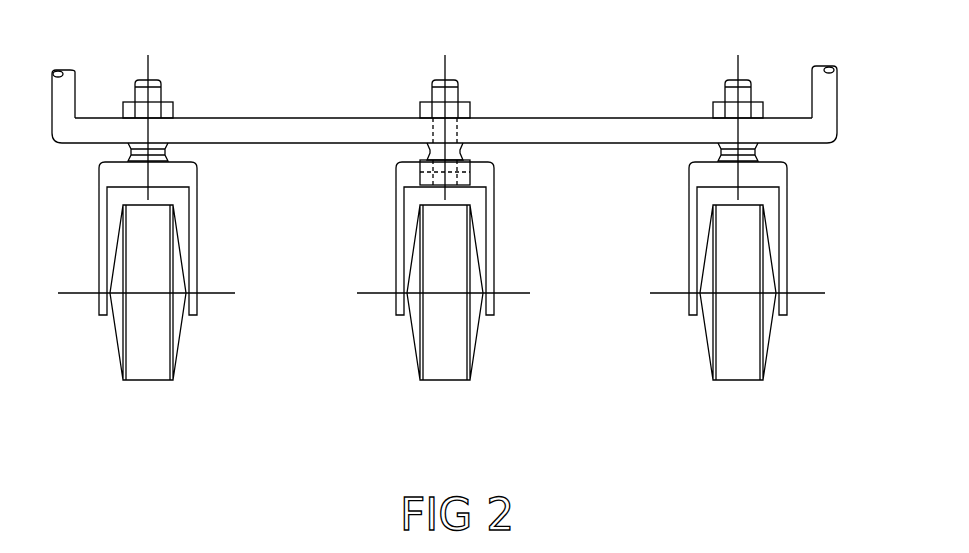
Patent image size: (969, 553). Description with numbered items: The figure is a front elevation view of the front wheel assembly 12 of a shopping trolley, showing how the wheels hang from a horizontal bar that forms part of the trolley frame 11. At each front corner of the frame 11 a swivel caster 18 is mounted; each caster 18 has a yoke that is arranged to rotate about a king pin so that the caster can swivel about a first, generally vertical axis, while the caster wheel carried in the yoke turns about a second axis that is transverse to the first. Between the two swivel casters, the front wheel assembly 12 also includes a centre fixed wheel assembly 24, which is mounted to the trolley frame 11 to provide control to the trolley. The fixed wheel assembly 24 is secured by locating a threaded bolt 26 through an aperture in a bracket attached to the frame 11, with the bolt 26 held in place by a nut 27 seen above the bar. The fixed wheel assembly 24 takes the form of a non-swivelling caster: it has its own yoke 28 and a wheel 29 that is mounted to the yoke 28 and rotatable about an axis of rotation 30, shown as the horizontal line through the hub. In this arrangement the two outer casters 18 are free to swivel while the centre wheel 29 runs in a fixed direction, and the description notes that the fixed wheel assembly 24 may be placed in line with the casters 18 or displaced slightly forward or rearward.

The frame 11 is at (310, 128).
The front wheel assembly 12 is at (544, 88).
The caster 18 is at (129, 400).
The centre fixed wheel assembly 24 is at (409, 392).
The threaded bolt 26 is at (408, 106).
The nut 27 is at (459, 109).
The yoke 28 is at (497, 176).
The wheel 29 is at (451, 326).
The axis of rotation 30 is at (434, 266).